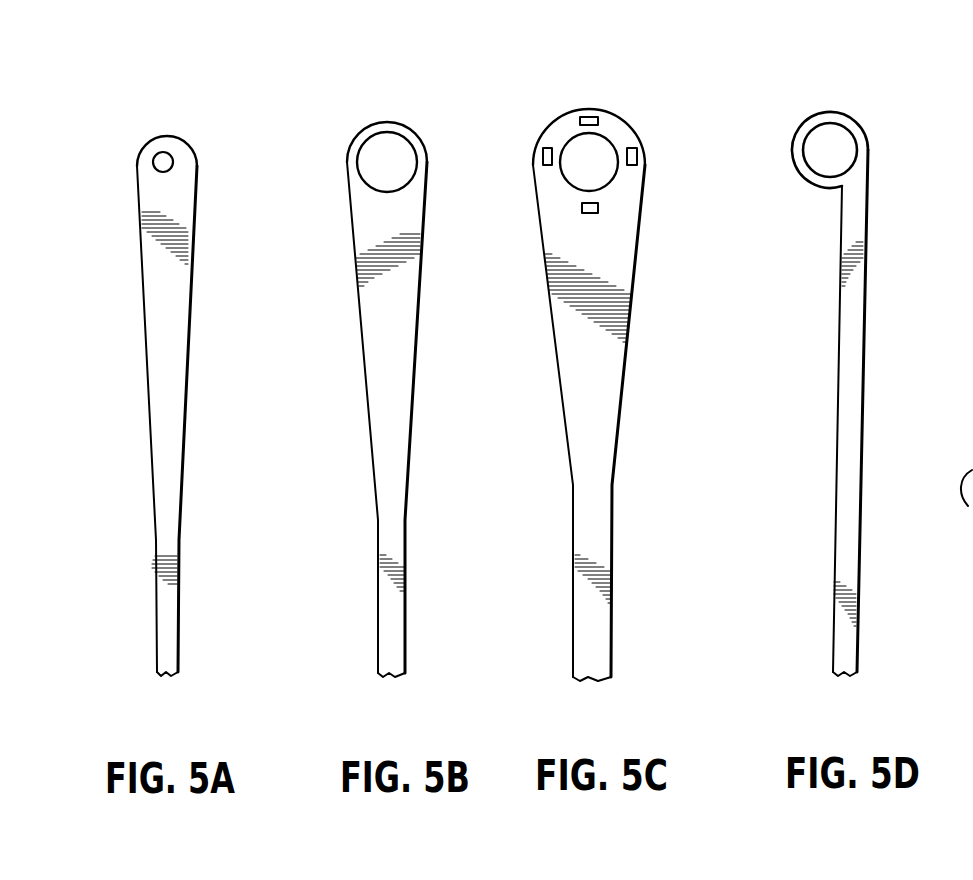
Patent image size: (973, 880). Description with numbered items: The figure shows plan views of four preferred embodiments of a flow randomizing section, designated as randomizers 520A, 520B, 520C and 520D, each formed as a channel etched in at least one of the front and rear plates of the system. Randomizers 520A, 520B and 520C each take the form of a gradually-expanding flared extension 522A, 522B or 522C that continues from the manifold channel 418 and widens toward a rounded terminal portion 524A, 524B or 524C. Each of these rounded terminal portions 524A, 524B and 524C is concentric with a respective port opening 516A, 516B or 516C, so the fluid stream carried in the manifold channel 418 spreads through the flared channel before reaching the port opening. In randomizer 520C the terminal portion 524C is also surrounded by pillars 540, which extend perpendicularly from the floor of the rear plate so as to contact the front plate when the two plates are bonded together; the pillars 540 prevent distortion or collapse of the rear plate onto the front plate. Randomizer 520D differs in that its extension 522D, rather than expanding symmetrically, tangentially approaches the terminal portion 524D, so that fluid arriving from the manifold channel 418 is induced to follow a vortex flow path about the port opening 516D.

In FIG. 5A, the rounded terminal portion 524A is at (165, 92).
In FIG. 5A, the port opening 516A is at (172, 156).
In FIG. 5A, the randomizer 520A is at (196, 258).
In FIG. 5A, the flared extension 522A is at (162, 318).
In FIG. 5B, the rounded terminal portion 524B is at (380, 124).
In FIG. 5B, the port opening 516B is at (405, 140).
In FIG. 5B, the randomizer 520B is at (418, 266).
In FIG. 5B, the flared extension 522B is at (395, 334).
In FIG. 5C, the rounded terminal portion 524C is at (608, 108).
In FIG. 5C, the port opening 516C is at (612, 143).
In FIG. 5C, the pillars 540 is at (598, 208).
In FIG. 5C, the randomizer 520C is at (637, 268).
In FIG. 5C, the flared extension 522C is at (585, 340).
In FIG. 5D, the terminal portion 524D is at (813, 118).
In FIG. 5D, the port opening 516D is at (846, 128).
In FIG. 5D, the randomizer 520D is at (867, 308).
In FIG. 5D, the extension 522D is at (848, 360).
In FIG. 5A, the manifold channel 418 is at (178, 592).
In FIG. 5B, the manifold channel 418 is at (405, 585).
In FIG. 5C, the manifold channel 418 is at (611, 603).
In FIG. 5D, the manifold channel 418 is at (857, 592).